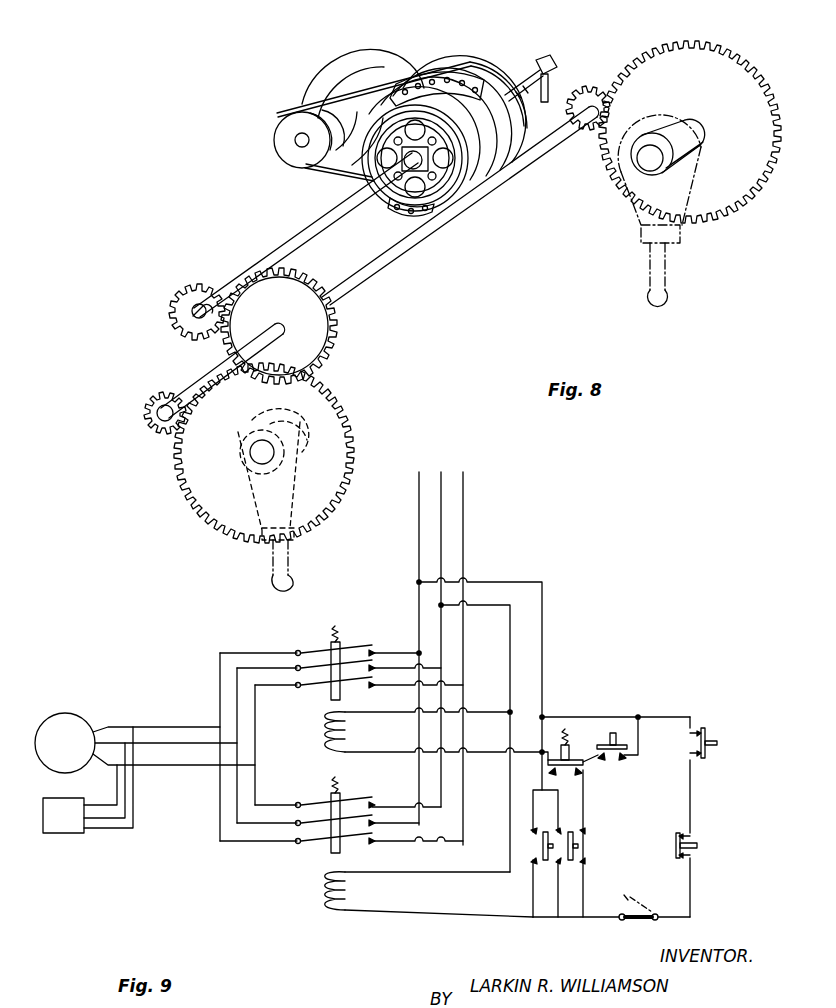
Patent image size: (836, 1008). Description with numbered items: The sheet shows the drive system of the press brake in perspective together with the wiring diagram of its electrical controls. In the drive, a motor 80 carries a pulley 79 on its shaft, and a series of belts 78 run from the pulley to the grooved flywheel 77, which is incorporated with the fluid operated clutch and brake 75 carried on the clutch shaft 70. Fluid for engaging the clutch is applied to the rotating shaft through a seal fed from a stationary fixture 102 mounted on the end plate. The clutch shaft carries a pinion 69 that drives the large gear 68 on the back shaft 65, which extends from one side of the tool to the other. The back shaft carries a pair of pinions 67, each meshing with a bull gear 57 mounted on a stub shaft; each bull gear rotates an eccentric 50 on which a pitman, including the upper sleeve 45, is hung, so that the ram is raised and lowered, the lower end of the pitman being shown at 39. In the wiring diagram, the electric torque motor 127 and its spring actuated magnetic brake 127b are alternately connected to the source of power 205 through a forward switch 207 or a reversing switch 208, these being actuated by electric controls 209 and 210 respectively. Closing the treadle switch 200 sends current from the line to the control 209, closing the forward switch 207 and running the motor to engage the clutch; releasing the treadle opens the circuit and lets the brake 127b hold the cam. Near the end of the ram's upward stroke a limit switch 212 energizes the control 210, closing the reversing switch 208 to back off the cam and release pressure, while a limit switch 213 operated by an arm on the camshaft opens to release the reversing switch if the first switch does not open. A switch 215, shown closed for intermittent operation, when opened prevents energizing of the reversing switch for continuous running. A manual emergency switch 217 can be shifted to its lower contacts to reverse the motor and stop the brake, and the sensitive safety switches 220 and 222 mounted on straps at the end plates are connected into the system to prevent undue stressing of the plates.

In FIG. 8, the knob 39 is at (668, 298).
In FIG. 8, the upper sleeve 45 is at (640, 235).
In FIG. 8, the eccentric 50 is at (657, 125).
In FIG. 8, the bull gear 57 is at (168, 507).
In FIG. 8, the back shaft 65 is at (405, 247).
In FIG. 8, the pinion 67 is at (590, 95).
In FIG. 8, the large gear 68 is at (338, 341).
In FIG. 8, the pinion 69 is at (205, 290).
In FIG. 8, the clutch shaft 70 is at (299, 238).
In FIG. 8, the fluid operated clutch and brake 75 is at (487, 120).
In FIG. 8, the flywheel 77 is at (456, 78).
In FIG. 8, the belts 78 is at (344, 178).
In FIG. 8, the pulley 79 is at (285, 148).
In FIG. 8, the motor 80 is at (364, 72).
In FIG. 8, the stationary fixture 102 is at (553, 74).
In FIG. 9, the electric torque motor 127 is at (70, 713).
In FIG. 9, the magnetic brake 127b is at (46, 834).
In FIG. 9, the switch 200 is at (606, 755).
In FIG. 9, the source of power 205 is at (466, 522).
In FIG. 9, the forward switch 207 is at (318, 638).
In FIG. 9, the reversing switch 208 is at (318, 788).
In FIG. 9, the electric control 209 is at (331, 700).
In FIG. 9, the electric control 210 is at (330, 852).
In FIG. 9, the limit switch 212 is at (710, 736).
In FIG. 9, the limit switch 213 is at (674, 857).
In FIG. 9, the switch 215 is at (642, 922).
In FIG. 9, the manual emergency switch 217 is at (574, 740).
In FIG. 9, the safety switch 220 is at (540, 845).
In FIG. 9, the safety switch 222 is at (578, 840).